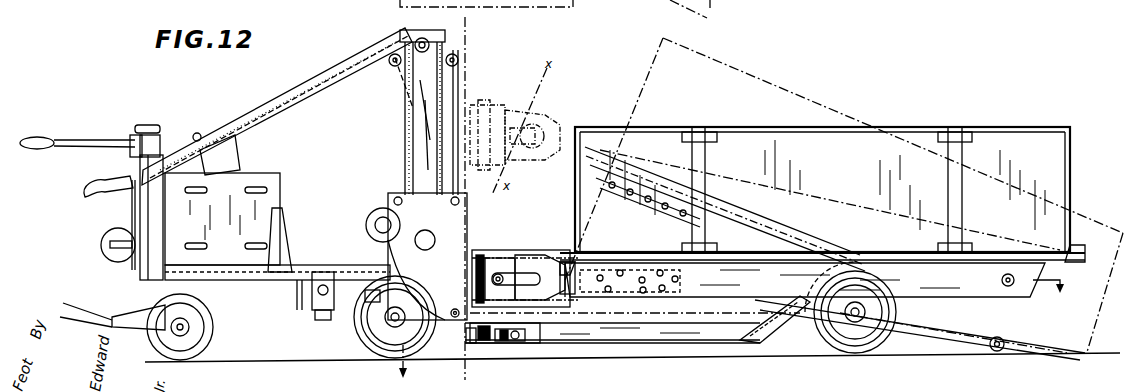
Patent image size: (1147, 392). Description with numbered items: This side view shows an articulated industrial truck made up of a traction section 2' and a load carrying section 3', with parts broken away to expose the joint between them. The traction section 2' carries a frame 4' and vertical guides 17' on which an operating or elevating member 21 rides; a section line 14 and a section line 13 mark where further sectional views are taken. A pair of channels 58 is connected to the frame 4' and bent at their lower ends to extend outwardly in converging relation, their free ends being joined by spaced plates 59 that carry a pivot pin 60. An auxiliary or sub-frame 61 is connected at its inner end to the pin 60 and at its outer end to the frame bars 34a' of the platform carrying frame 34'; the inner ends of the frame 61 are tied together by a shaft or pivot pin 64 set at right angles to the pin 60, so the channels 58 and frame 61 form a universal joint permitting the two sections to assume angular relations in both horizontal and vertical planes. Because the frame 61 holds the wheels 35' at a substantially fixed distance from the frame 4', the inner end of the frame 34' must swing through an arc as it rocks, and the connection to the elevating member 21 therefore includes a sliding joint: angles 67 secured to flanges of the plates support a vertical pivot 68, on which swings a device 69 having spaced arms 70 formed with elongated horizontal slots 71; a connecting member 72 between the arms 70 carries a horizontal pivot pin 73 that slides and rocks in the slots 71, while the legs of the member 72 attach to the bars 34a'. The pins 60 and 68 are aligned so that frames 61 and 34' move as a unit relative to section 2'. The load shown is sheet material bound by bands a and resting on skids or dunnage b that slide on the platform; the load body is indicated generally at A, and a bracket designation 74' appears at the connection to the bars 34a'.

The traction section 2' is at (176, 266).
The load carrying section 3' is at (775, 326).
The frame 4' is at (277, 287).
The section line 13 is at (731, 336).
The section line 14 is at (465, 17).
The guides 17' is at (283, 106).
The motor 21 is at (470, 212).
The platform frame 34' is at (725, 209).
The frame bars 34a' is at (822, 275).
The wheels 35' is at (920, 330).
The channels 58 is at (418, 335).
The spaced plates 59 is at (475, 343).
The pivot pin 60 is at (488, 343).
The auxiliary frame 61 is at (612, 342).
The shaft or pivot pin 64 is at (505, 343).
The angles 67 is at (476, 255).
The vertical pivot 68 is at (499, 266).
The swingable device 69 is at (528, 262).
The spaced arms 70 is at (515, 278).
The elongated horizontal slots 71 is at (560, 322).
The connecting member 72 is at (539, 265).
The horizontal pivot pin 73 is at (416, 256).
The bracket 74' is at (590, 253).
The container body A is at (998, 145).
The bands a is at (705, 165).
The skids or dunnage b is at (1076, 249).